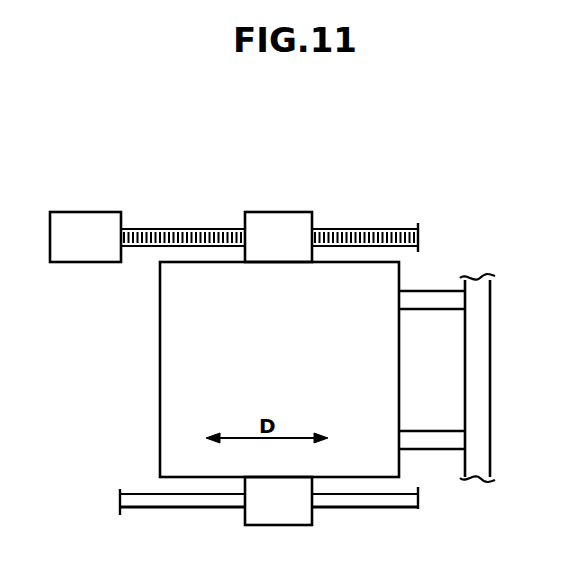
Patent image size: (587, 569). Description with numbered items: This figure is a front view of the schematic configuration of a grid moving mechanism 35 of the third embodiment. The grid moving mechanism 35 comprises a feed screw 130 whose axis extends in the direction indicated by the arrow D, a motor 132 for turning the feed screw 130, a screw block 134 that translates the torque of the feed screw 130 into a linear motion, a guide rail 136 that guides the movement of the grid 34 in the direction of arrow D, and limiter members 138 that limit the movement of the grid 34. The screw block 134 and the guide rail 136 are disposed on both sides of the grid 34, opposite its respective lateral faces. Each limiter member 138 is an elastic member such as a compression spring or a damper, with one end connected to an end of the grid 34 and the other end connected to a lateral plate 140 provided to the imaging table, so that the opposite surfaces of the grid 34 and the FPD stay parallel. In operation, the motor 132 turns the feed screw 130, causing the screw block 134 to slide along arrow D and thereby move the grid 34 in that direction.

The grid moving mechanism 35 is at (94, 139).
The grid 34 is at (400, 347).
The feed screw 130 is at (189, 228).
The motor 132 is at (96, 214).
The screw block 134 is at (289, 214).
The guide rail 136 is at (176, 507).
The limiter member 138 is at (443, 291).
The lateral plate 140 is at (491, 380).